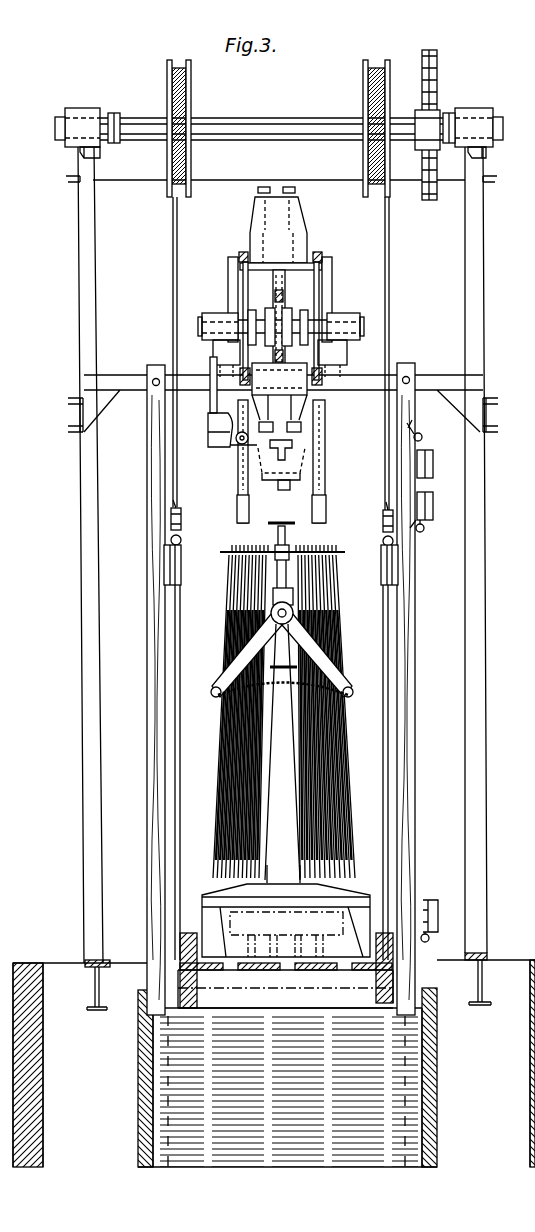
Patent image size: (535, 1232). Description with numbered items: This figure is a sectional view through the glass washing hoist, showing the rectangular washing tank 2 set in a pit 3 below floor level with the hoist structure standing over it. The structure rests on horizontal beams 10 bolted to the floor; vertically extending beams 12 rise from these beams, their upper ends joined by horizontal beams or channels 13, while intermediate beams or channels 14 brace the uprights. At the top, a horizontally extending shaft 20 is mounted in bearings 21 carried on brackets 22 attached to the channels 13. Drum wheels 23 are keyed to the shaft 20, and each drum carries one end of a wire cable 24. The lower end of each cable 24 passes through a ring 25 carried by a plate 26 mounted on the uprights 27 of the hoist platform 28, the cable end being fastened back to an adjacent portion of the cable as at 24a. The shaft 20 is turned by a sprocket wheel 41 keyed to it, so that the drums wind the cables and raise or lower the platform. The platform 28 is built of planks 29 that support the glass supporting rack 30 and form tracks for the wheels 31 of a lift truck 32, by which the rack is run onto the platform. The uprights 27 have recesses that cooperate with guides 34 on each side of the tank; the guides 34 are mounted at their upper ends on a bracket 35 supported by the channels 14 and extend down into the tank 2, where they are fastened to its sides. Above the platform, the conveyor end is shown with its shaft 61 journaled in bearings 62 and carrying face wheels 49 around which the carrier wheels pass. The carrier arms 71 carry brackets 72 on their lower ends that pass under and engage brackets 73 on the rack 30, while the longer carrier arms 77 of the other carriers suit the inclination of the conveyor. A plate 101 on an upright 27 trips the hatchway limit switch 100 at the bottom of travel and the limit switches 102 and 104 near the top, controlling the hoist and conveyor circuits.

The washing tank 2 is at (437, 1047).
The pit 3 is at (274, 1063).
The beams 10 is at (94, 987).
The vertically extending beams 12 is at (82, 592).
The horizontally extending beams 13 is at (66, 176).
The bracing beams 14 is at (68, 418).
The shaft 20 is at (294, 124).
The bearings 21 is at (82, 112).
The brackets 22 is at (96, 152).
The drum wheels 23 is at (167, 67).
The wire cable 24 is at (172, 232).
The cable fastening 24a is at (181, 512).
The ring 25 is at (181, 538).
The plate 26 is at (181, 567).
The uprights 27 is at (181, 642).
The hoist platform 28 is at (180, 942).
The planks 29 is at (362, 971).
The glass supporting rack 30 is at (286, 740).
The wheels 31 is at (248, 945).
The lift truck 32 is at (286, 923).
The guides 34 is at (147, 635).
The bracket 35 is at (431, 374).
The sprocket wheel 41 is at (437, 58).
The face wheels 49 is at (240, 278).
The shaft 61 is at (296, 320).
The bearings 62 is at (215, 313).
The carrier arms 71 is at (296, 410).
The brackets 72 is at (258, 192).
The brackets 73 is at (300, 447).
The carrier arms 77 is at (258, 216).
The hatchway limit switch 100 is at (440, 905).
The plate 101 is at (416, 545).
The limit switch 102 is at (428, 506).
The hatchway limit switch 104 is at (433, 465).